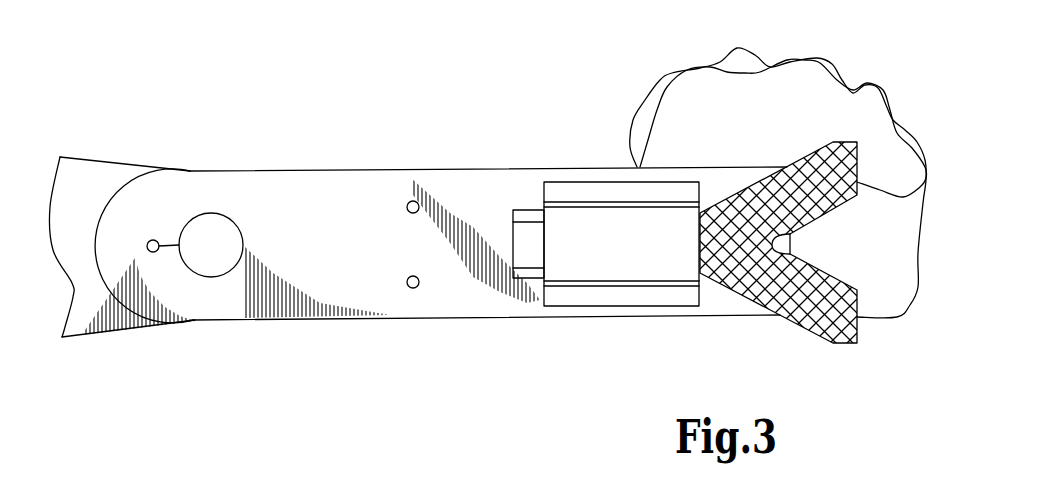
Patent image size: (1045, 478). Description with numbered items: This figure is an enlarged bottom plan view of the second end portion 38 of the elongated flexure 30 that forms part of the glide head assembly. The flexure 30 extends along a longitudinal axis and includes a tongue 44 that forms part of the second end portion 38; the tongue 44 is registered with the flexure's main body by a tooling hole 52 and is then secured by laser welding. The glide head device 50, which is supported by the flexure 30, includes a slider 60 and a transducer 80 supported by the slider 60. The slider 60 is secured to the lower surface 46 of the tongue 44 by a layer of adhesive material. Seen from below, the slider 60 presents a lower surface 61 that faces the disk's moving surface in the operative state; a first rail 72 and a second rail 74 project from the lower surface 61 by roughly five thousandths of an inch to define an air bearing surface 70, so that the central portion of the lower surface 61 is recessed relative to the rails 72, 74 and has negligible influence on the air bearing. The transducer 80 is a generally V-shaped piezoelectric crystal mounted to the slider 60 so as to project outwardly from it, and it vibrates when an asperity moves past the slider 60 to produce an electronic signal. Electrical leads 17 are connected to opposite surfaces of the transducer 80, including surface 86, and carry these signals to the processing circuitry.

The electrical leads 17 is at (862, 92).
The flexure 30 is at (123, 183).
The second end portion 38 is at (446, 85).
The tongue 44 is at (438, 188).
The lower surface of tongue 46 is at (372, 250).
The glide head device 50 is at (740, 134).
The tooling hole 52 is at (208, 232).
The slider 60 is at (582, 257).
The lower surface of slider 61 is at (648, 266).
The air bearing surface 70 is at (661, 193).
The first rail 72 is at (608, 188).
The second rail 74 is at (633, 295).
The transducer 80 is at (809, 331).
The surface of transducer 86 is at (808, 277).